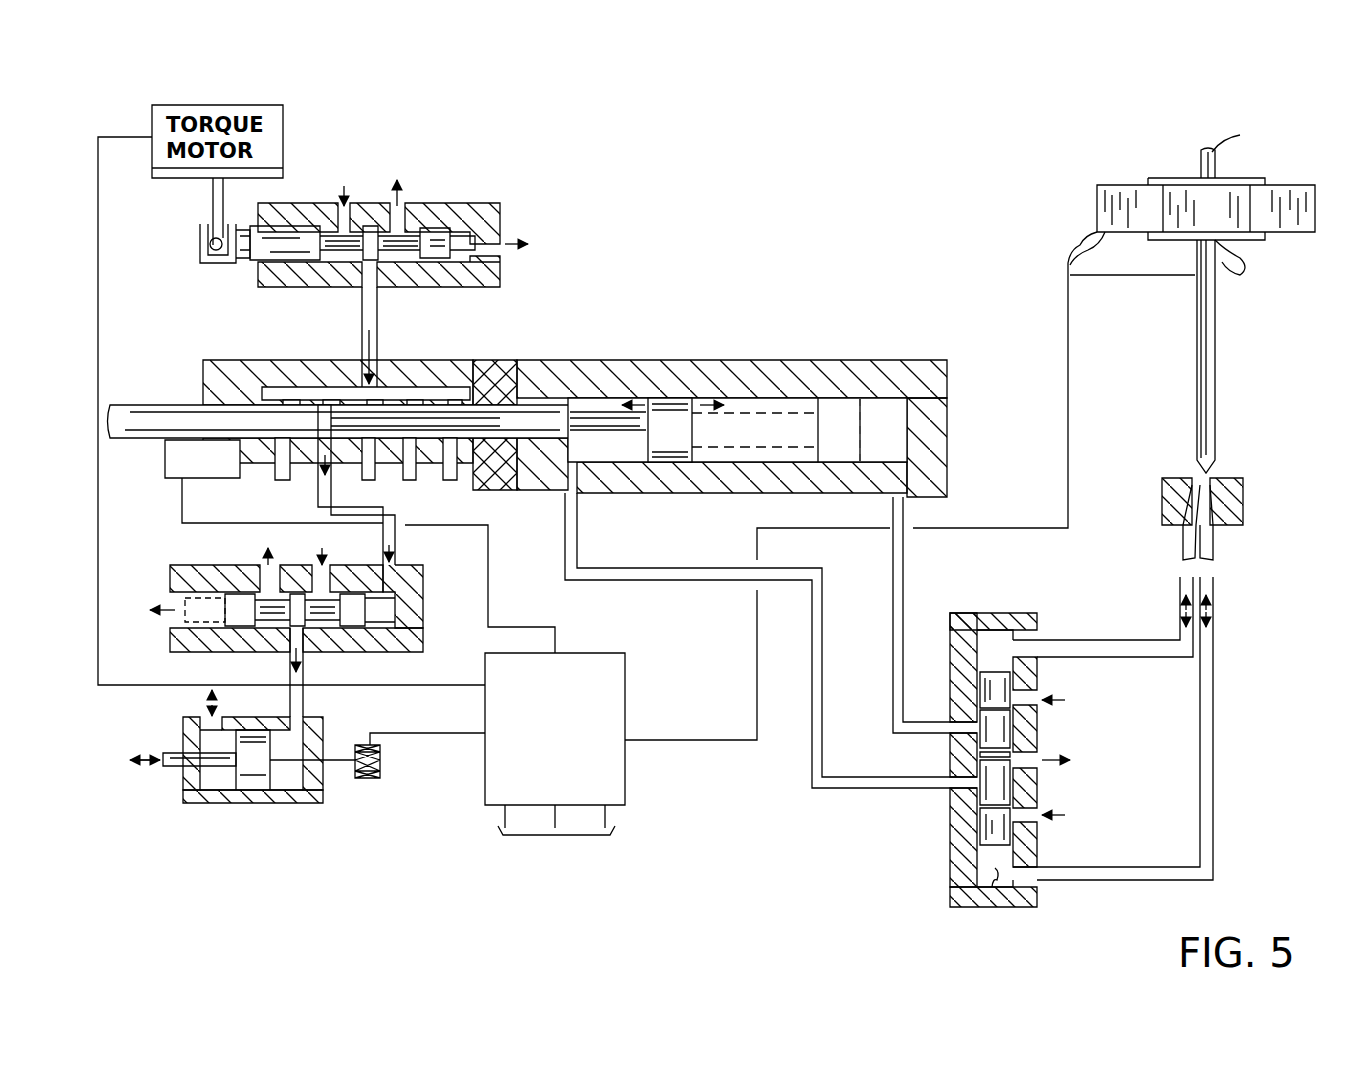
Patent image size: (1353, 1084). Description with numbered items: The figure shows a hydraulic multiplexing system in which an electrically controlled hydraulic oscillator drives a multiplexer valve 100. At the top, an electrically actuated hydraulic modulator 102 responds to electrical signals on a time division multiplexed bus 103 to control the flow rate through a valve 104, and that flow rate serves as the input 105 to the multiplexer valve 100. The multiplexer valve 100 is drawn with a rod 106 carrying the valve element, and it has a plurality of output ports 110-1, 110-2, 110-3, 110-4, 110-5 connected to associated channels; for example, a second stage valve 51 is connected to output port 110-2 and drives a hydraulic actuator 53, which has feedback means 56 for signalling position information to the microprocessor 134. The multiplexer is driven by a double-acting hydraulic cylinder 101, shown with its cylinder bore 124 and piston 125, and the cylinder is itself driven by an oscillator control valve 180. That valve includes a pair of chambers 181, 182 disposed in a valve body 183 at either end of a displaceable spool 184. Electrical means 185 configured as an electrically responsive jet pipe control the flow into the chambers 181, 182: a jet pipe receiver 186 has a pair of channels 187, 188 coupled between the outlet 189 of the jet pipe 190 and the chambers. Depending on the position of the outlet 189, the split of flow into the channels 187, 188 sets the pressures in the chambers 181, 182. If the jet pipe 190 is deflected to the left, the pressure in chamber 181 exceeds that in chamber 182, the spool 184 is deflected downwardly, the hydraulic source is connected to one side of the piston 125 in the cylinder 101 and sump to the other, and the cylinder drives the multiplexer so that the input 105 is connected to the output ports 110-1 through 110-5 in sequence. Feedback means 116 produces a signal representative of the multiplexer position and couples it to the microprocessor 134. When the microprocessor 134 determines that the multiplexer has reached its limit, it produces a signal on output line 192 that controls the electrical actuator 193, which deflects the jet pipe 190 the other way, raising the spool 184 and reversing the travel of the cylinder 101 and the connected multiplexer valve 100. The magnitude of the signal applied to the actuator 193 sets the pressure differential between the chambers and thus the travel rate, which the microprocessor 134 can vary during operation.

The second stage valve 51 is at (420, 585).
The hydraulic actuator 53 is at (258, 800).
The feedback means 56 is at (378, 780).
The multiplexer valve 100 is at (345, 355).
The double-acting hydraulic cylinder 101 is at (648, 360).
The electrically actuated hydraulic modulator 102 is at (405, 214).
The time division multiplexed bus 103 is at (100, 238).
The valve 104 is at (492, 212).
The input 105 is at (375, 350).
The valve rod 106 is at (225, 413).
The output port 110-1 is at (278, 480).
The output port 110-2 is at (318, 481).
The output port 110-3 is at (375, 478).
The output port 110-4 is at (416, 478).
The output port 110-5 is at (457, 478).
The feedback means 116 is at (183, 472).
The cylinder 124 is at (893, 438).
The piston 125 is at (596, 452).
The microprocessor 134 is at (627, 670).
The oscillator control valve 180 is at (990, 752).
The chamber 181 is at (990, 633).
The chamber 182 is at (993, 897).
The valve body 183 is at (955, 888).
The spool 184 is at (988, 830).
The electrical means 185 is at (1220, 302).
The jet pipe receiver 186 is at (1162, 487).
The channel 187 is at (1181, 581).
The channel 188 is at (1214, 581).
The outlet of the jet pipe 189 is at (1212, 468).
The jet pipe 190 is at (1216, 368).
The output line 192 is at (1069, 400).
The electrical actuator 193 is at (1097, 190).